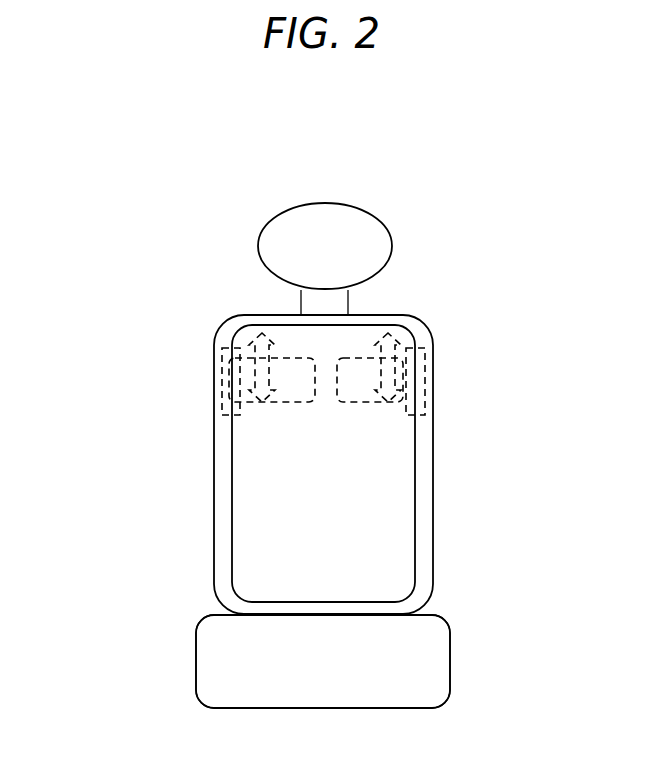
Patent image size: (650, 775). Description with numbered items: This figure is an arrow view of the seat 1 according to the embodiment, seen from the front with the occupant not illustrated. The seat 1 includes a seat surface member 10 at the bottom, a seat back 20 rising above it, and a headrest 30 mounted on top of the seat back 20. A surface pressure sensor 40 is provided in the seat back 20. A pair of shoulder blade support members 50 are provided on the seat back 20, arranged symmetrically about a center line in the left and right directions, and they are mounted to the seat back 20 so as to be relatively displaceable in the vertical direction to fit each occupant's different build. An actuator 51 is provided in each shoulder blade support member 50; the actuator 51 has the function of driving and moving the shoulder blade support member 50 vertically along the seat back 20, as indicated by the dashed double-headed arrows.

The seat 1 is at (184, 192).
The seat surface member 10 is at (196, 666).
The seat back 20 is at (214, 359).
The headrest 30 is at (303, 208).
The surface pressure sensor 40 is at (232, 553).
The shoulder blade support member 50 is at (365, 400).
The actuator 51 is at (238, 350).